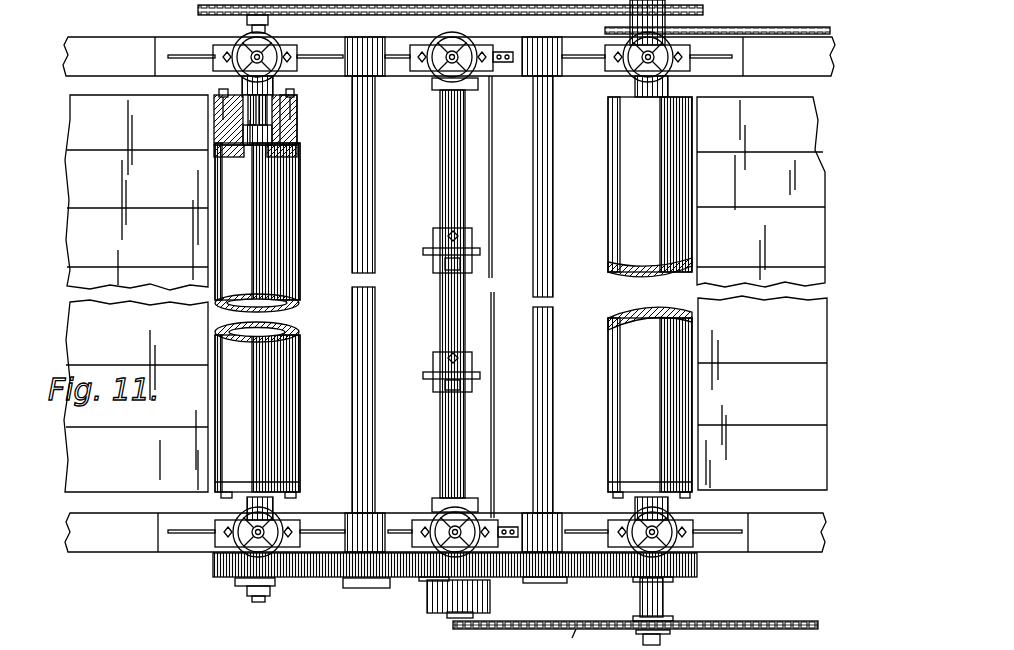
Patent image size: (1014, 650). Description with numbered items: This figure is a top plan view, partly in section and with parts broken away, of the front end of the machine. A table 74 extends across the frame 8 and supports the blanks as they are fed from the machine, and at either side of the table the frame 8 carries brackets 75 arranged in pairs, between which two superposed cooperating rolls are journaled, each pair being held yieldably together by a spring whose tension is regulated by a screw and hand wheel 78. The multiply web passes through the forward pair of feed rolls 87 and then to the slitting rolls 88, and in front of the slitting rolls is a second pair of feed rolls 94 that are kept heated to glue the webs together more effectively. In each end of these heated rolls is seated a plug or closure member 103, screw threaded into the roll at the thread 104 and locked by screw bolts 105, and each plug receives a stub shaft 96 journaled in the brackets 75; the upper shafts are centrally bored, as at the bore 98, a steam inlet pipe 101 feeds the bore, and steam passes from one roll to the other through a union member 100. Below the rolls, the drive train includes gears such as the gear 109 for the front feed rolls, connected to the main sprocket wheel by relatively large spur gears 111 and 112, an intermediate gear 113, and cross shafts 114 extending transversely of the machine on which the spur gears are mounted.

The frame 8 is at (128, 565).
The table 74 is at (445, 293).
The brackets 75 is at (718, 71).
The hand wheel 78 is at (236, 40).
The forward pair of feed rolls 87 is at (620, 275).
The slitting rolls 88 is at (433, 262).
The second pair of feed rolls 94 is at (296, 306).
The stub shaft 96 is at (228, 124).
The central bore 98 is at (250, 146).
The union member 100 is at (272, 592).
The steam inlet pipe 101 is at (268, 17).
The plug or closure member 103 is at (297, 135).
The screw thread 104 is at (297, 120).
The screw bolts 105 is at (294, 93).
The gear 109 is at (213, 580).
The spur gear 111 is at (347, 584).
The spur gear 112 is at (522, 580).
The intermediate gear 113 is at (428, 580).
The cross shafts 114 is at (553, 215).